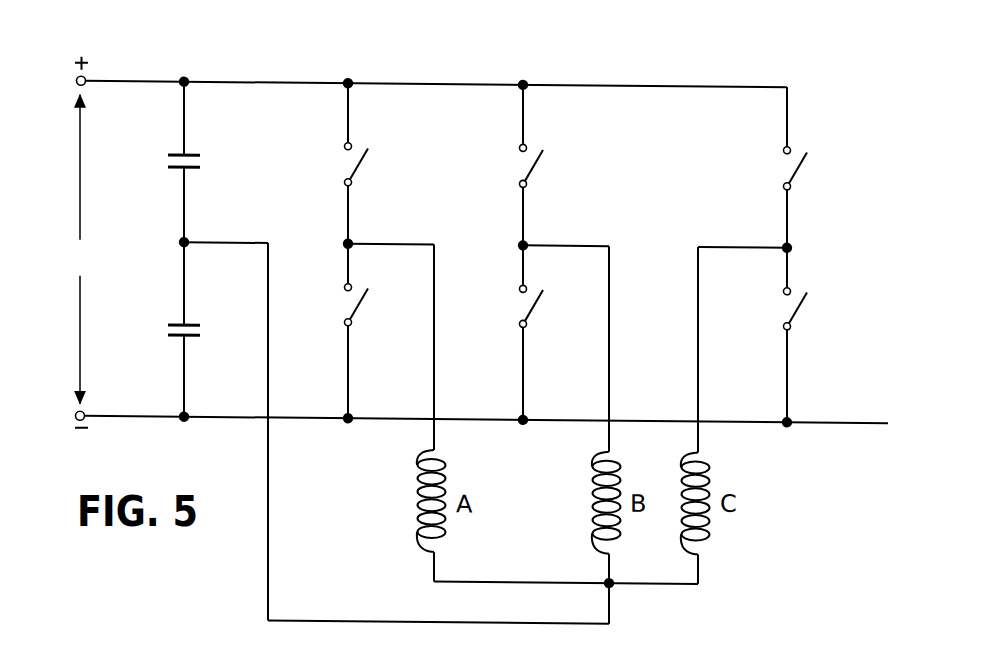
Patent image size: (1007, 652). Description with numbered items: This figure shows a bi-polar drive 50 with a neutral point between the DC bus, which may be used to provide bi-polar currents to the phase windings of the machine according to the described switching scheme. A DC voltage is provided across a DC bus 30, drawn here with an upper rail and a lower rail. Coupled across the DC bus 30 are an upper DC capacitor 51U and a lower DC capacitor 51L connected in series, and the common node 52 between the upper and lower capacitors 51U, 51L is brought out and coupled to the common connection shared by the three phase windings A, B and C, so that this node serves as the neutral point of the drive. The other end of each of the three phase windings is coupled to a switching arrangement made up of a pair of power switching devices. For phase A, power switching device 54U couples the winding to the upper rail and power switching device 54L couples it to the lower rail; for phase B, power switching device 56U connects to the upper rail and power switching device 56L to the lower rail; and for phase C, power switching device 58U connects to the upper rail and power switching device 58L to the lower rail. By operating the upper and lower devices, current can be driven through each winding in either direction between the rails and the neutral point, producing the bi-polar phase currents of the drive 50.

The bi-polar drive 50 is at (167, 75).
The DC bus 30 is at (60, 235).
The upper DC capacitor 51U is at (201, 160).
The lower DC capacitor 51L is at (201, 326).
The common node 52 is at (182, 239).
The power switching device 54U is at (358, 160).
The power switching device 54L is at (358, 300).
The power switching device 56U is at (533, 159).
The power switching device 56L is at (533, 299).
The power switching device 58U is at (797, 159).
The power switching device 58L is at (797, 301).